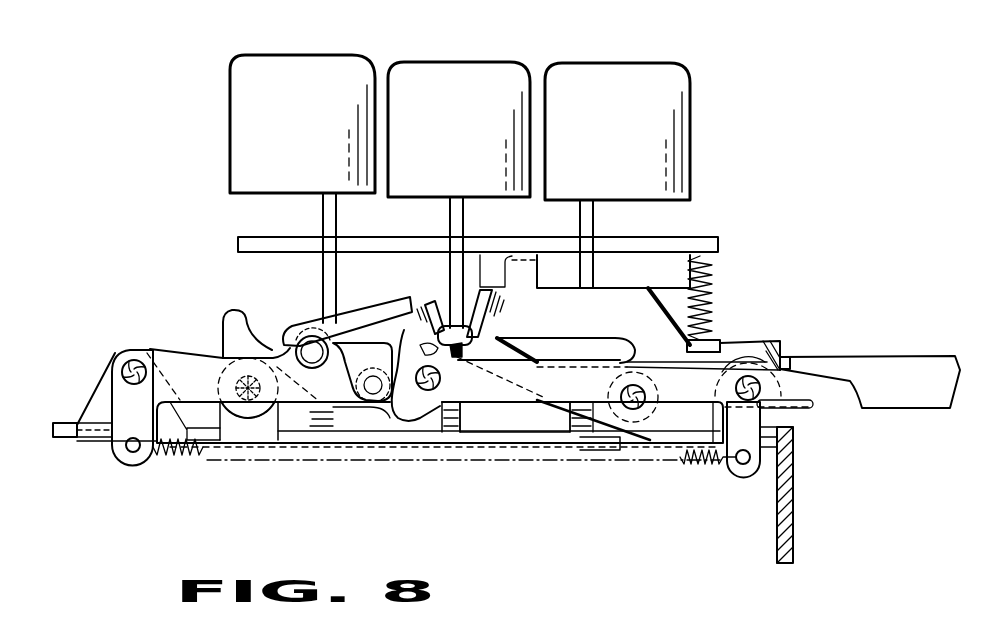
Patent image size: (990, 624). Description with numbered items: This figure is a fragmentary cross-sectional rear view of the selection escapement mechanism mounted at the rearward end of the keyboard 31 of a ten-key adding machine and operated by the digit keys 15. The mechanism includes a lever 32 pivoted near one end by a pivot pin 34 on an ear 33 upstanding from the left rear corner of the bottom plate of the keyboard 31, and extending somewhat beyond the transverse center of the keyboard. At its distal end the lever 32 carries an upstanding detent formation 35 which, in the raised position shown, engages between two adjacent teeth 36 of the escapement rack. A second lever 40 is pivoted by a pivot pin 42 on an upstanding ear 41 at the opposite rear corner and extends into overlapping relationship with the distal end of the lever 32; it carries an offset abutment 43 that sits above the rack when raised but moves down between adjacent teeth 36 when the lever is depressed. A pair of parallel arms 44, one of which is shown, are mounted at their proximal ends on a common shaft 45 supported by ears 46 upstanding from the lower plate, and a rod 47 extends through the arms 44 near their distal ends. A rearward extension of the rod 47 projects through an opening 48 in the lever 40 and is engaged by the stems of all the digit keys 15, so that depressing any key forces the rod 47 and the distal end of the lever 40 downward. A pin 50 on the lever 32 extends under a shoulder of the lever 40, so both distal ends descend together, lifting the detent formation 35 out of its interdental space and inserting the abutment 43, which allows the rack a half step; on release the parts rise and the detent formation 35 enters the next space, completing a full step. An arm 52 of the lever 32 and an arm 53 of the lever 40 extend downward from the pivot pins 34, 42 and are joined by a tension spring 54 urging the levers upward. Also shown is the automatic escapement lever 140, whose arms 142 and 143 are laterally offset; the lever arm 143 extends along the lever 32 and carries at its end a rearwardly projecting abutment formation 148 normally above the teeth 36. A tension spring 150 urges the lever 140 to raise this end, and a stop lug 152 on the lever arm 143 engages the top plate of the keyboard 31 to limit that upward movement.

The digit keys 15 is at (560, 62).
The keyboard 31 is at (485, 442).
The lever 32 is at (537, 398).
The ear 33 is at (766, 348).
The pivot pin 34 is at (750, 375).
The detent formation 35 is at (412, 318).
The teeth 36 is at (443, 358).
The second lever 40 is at (213, 362).
The ear 41 is at (88, 405).
The pivot pin 42 is at (136, 360).
The abutment 43 is at (432, 301).
The arms 44 is at (538, 338).
The shaft 45 is at (650, 408).
The ears 46 is at (592, 445).
The rod 47 is at (374, 377).
The opening 48 is at (366, 336).
The pin 50 is at (442, 416).
The arm 52 is at (757, 479).
The arm 53 is at (112, 448).
The tension spring 54 is at (706, 468).
The automatic escapement lever 140 is at (786, 360).
The lever arm 142 is at (955, 357).
The lever arm 143 is at (650, 292).
The abutment formation 148 is at (490, 316).
The tension spring 150 is at (710, 292).
The stop lug 152 is at (518, 262).